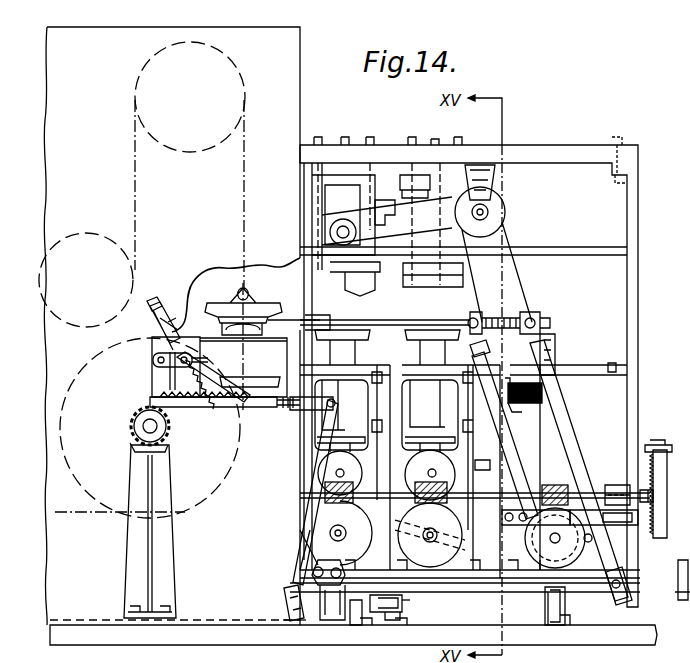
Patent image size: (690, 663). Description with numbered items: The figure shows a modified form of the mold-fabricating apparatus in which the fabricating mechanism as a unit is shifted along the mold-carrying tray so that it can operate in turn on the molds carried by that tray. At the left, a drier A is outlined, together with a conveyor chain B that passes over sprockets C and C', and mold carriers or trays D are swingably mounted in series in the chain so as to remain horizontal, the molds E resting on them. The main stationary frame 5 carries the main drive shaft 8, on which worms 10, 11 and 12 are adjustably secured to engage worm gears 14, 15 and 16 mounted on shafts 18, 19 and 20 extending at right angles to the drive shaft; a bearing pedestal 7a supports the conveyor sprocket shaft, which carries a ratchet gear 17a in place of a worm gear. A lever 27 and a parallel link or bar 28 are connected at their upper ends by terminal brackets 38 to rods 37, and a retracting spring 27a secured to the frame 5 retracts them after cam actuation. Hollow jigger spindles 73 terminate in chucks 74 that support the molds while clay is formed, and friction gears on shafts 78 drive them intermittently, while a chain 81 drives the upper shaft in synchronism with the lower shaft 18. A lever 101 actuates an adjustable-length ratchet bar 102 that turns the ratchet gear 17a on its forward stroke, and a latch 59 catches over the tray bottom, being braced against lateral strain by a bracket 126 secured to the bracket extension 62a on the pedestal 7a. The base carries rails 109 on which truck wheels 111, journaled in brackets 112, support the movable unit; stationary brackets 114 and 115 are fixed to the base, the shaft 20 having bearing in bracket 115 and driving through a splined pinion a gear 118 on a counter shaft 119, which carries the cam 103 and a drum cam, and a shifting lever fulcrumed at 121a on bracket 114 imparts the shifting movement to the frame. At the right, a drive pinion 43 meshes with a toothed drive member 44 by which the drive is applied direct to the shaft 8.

The drier A is at (300, 52).
The conveyor chain B is at (244, 170).
The roll C' is at (190, 111).
The sprockets C is at (147, 429).
The mold carriers or trays D is at (280, 360).
The molds E is at (280, 293).
The main stationary frame 5 is at (638, 228).
The bearing pedestal 7a is at (150, 531).
The main drive shaft 8 is at (522, 492).
The worm 10 is at (553, 486).
The worm 11 is at (430, 476).
The worm 12 is at (340, 473).
The worm gear 14 is at (628, 560).
The worm gear 15 is at (460, 560).
The worm gear 16 is at (355, 500).
The ratchet gear 17a is at (168, 438).
The shaft 18 is at (550, 548).
The shaft 19 is at (430, 535).
The shaft 20 is at (351, 533).
The lever 27 is at (575, 420).
The retracting spring 27a is at (523, 404).
The link or bar 28 is at (520, 460).
The rods 37 is at (385, 316).
The terminal brackets 38 is at (472, 308).
The drive pinion 43 is at (660, 440).
The rack 44 is at (664, 494).
The latch 59 is at (146, 325).
The bracket extension 62a is at (150, 395).
The hollow jigger spindles 73 is at (395, 354).
The chucks 74 is at (373, 338).
The shafts 78 is at (443, 466).
The chain 81 is at (525, 285).
The lever 101 is at (295, 565).
The ratchet bar 102 is at (262, 405).
The cam 103 is at (283, 588).
The tracks or rails 109 is at (566, 624).
The truck wheels 111 is at (545, 622).
The brackets 112 is at (565, 600).
The stationary bracket 114 is at (395, 620).
The stationary bracket 115 is at (355, 625).
The gear 118 is at (300, 540).
The counter shaft 119 is at (680, 580).
The fulcrum 121a is at (412, 603).
The bracket 126 is at (150, 357).